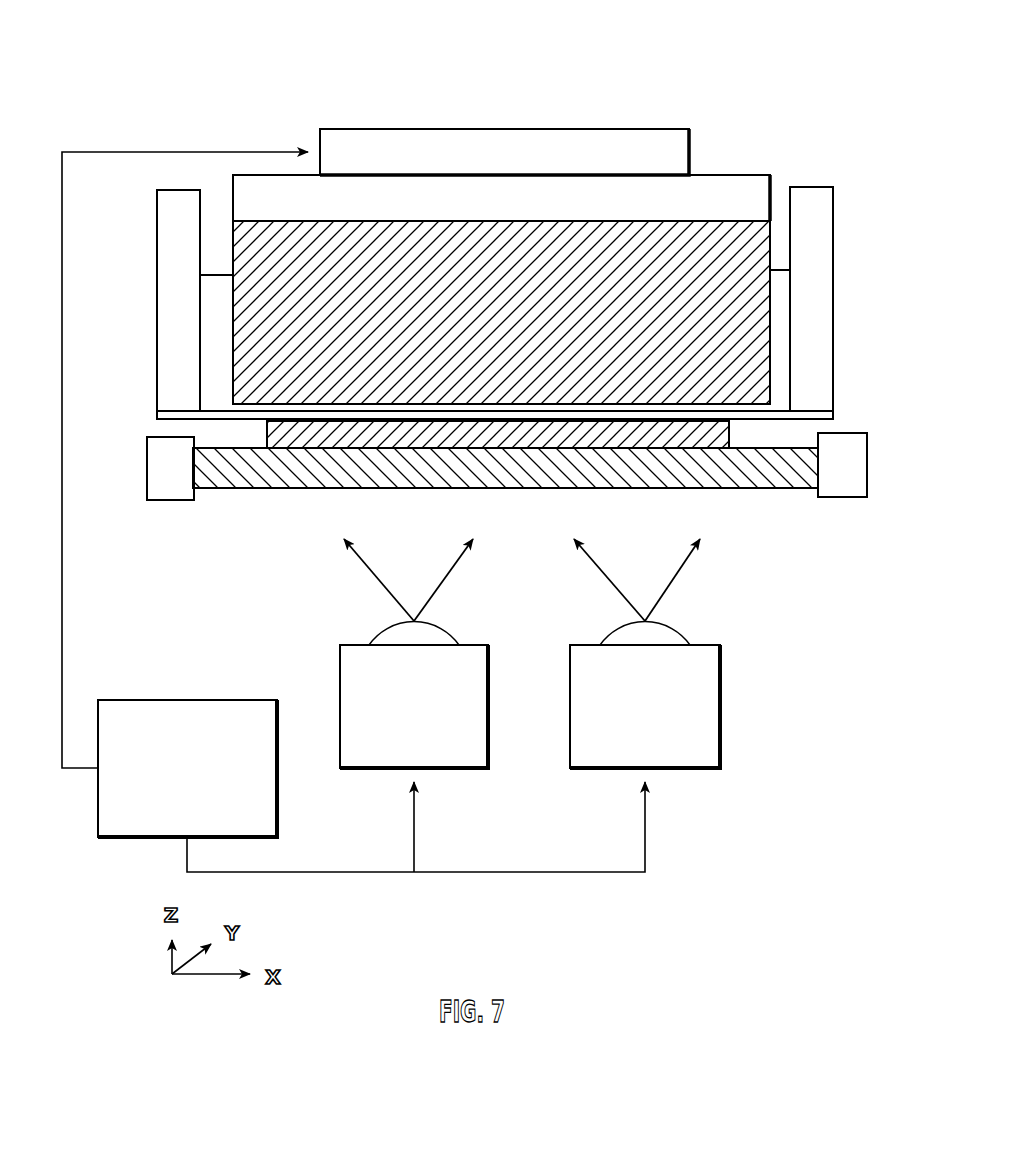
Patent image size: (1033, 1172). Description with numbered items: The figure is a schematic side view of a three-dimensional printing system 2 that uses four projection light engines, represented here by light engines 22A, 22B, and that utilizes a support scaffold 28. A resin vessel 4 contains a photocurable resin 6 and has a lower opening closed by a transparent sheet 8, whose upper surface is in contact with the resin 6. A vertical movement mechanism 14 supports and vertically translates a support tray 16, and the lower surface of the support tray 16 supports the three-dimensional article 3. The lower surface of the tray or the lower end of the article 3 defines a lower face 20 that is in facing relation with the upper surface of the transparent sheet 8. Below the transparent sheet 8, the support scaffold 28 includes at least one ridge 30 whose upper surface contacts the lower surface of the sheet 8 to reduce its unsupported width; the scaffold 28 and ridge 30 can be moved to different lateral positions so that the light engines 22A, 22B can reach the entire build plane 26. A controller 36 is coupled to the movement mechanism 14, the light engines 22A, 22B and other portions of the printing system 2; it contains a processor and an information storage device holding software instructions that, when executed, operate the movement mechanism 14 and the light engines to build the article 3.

The three-dimensional printing system 2 is at (688, 70).
The three-dimensional article 3 is at (260, 340).
The resin vessel 4 is at (812, 187).
The photocurable resin 6 is at (207, 292).
The transparent sheet 8 is at (223, 419).
The vertical movement mechanism 14 is at (583, 129).
The support tray 16 is at (738, 173).
The lower face 20 is at (716, 406).
The build plane 26 is at (560, 411).
The support scaffold 28 is at (138, 472).
The ridge 30 is at (295, 438).
The controller 36 is at (188, 700).
The projection light engine 22A is at (414, 653).
The projection light engine 22B is at (645, 653).